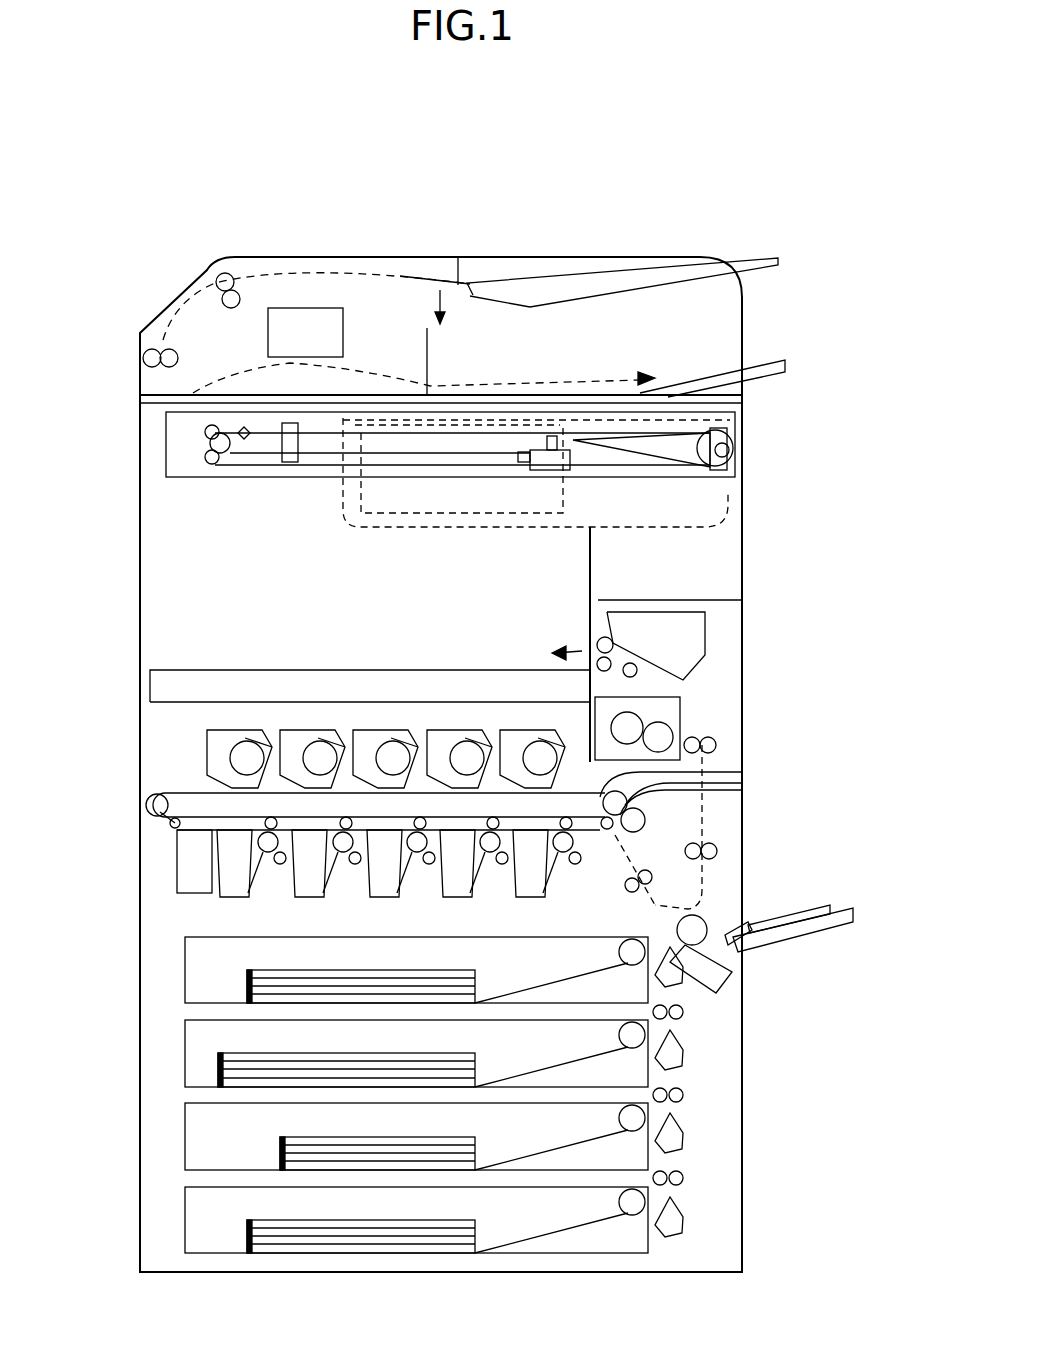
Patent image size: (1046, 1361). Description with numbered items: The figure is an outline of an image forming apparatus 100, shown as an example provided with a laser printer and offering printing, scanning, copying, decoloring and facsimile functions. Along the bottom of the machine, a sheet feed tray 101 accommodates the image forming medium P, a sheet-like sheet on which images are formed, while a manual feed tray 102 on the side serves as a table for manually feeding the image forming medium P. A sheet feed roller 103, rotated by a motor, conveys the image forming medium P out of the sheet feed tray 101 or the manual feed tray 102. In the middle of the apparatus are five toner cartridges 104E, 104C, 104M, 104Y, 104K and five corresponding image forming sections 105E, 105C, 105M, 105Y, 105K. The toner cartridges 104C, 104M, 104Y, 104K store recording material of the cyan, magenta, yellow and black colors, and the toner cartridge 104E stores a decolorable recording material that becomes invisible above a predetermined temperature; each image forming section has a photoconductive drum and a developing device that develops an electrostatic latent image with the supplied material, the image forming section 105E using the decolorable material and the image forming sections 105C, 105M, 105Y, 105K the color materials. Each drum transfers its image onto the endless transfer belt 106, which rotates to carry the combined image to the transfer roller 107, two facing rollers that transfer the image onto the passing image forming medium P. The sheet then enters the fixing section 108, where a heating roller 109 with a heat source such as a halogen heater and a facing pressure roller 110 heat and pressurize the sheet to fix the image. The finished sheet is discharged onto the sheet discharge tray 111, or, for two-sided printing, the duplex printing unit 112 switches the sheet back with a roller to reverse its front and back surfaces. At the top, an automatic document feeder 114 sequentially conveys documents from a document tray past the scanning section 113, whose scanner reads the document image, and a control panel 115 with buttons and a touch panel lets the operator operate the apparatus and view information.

The image forming apparatus 100 is at (770, 210).
The sheet feed tray 101 is at (455, 1095).
The manual feed tray 102 is at (775, 955).
The sheet feed roller 103 is at (628, 1212).
The toner cartridge 104E is at (207, 737).
The toner cartridge 104C is at (280, 748).
The toner cartridge 104M is at (353, 762).
The toner cartridge 104Y is at (427, 776).
The toner cartridge 104K is at (500, 788).
The image forming section 105E is at (177, 878).
The image forming section 105C is at (245, 888).
The image forming section 105M is at (318, 893).
The image forming section 105Y is at (392, 895).
The image forming section 105K is at (468, 896).
The transfer belt 106 is at (742, 772).
The transfer roller 107 is at (742, 790).
The fixing section 108 is at (683, 685).
The heating roller 109 is at (588, 748).
The pressure roller 110 is at (590, 705).
The sheet discharge tray 111 is at (583, 745).
The duplex printing unit 112 is at (717, 838).
The scanning section 113 is at (173, 422).
The automatic document feeder 114 is at (175, 303).
The control panel 115 is at (708, 516).
The image forming medium P is at (247, 1222).